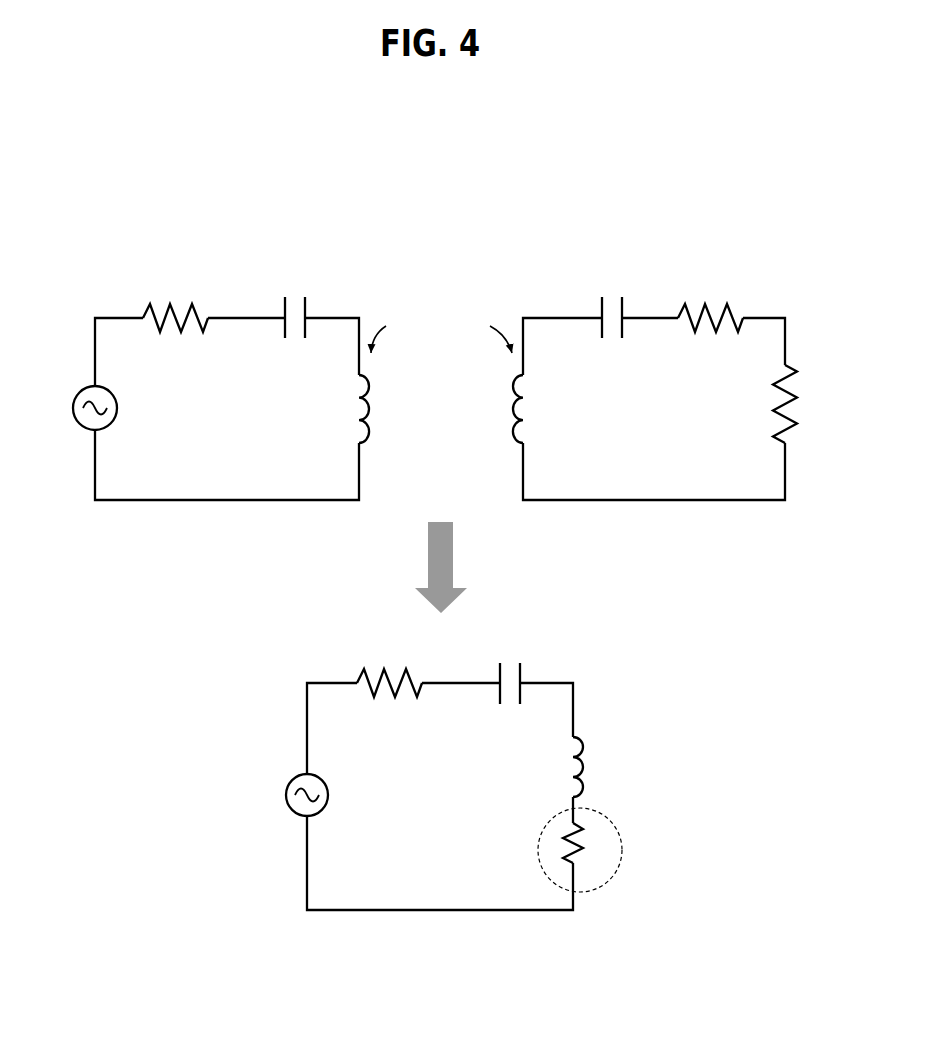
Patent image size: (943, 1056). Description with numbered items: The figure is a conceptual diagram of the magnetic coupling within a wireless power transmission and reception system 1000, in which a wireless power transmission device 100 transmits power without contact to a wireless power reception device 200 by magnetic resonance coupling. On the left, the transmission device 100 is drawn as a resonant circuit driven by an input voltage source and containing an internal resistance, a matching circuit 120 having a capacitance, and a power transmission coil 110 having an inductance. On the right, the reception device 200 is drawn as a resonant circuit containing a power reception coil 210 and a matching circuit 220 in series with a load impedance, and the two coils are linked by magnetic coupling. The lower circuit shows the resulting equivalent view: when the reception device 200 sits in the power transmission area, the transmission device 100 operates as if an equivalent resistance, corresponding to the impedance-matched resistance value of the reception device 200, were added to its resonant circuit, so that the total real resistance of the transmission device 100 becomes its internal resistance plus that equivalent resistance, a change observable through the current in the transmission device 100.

The wireless power transmission and reception system 1000 is at (460, 206).
The wireless power transmission device 100 is at (103, 295).
The power transmission coil 110 is at (348, 442).
The matching circuit 120 is at (277, 332).
The wireless power reception device 200 is at (784, 299).
The power reception coil 210 is at (538, 446).
The matching circuit 220 is at (595, 332).